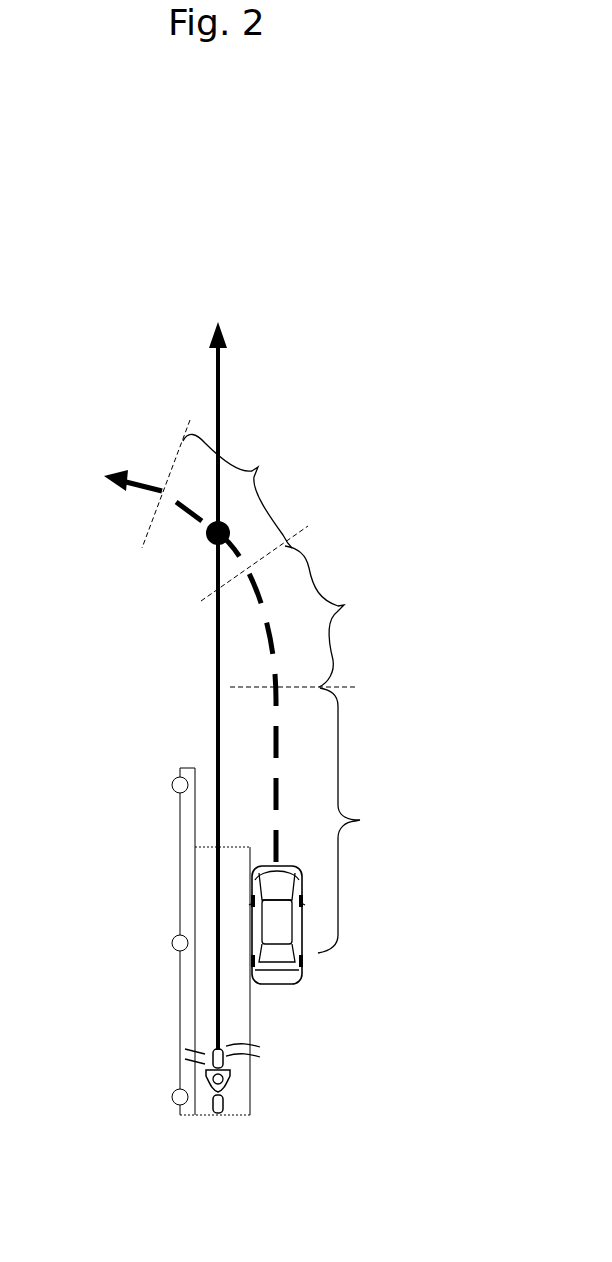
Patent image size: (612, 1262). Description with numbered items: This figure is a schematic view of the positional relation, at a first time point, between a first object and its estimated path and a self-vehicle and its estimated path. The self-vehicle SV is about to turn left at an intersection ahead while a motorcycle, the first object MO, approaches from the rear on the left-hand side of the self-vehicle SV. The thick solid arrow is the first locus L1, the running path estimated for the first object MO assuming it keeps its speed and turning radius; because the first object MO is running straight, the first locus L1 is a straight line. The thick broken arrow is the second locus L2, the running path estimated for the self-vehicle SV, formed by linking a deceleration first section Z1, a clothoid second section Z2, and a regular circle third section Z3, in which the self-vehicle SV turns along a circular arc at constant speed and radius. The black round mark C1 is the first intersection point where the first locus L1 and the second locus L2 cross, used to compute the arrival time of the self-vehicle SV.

The first locus L1 is at (215, 671).
The second locus L2 is at (170, 666).
The first intersection point C1 is at (202, 546).
The first section Z1 is at (358, 820).
The second section Z2 is at (334, 616).
The third section Z3 is at (244, 491).
The self-vehicle SV is at (303, 967).
The first object MO is at (230, 1090).